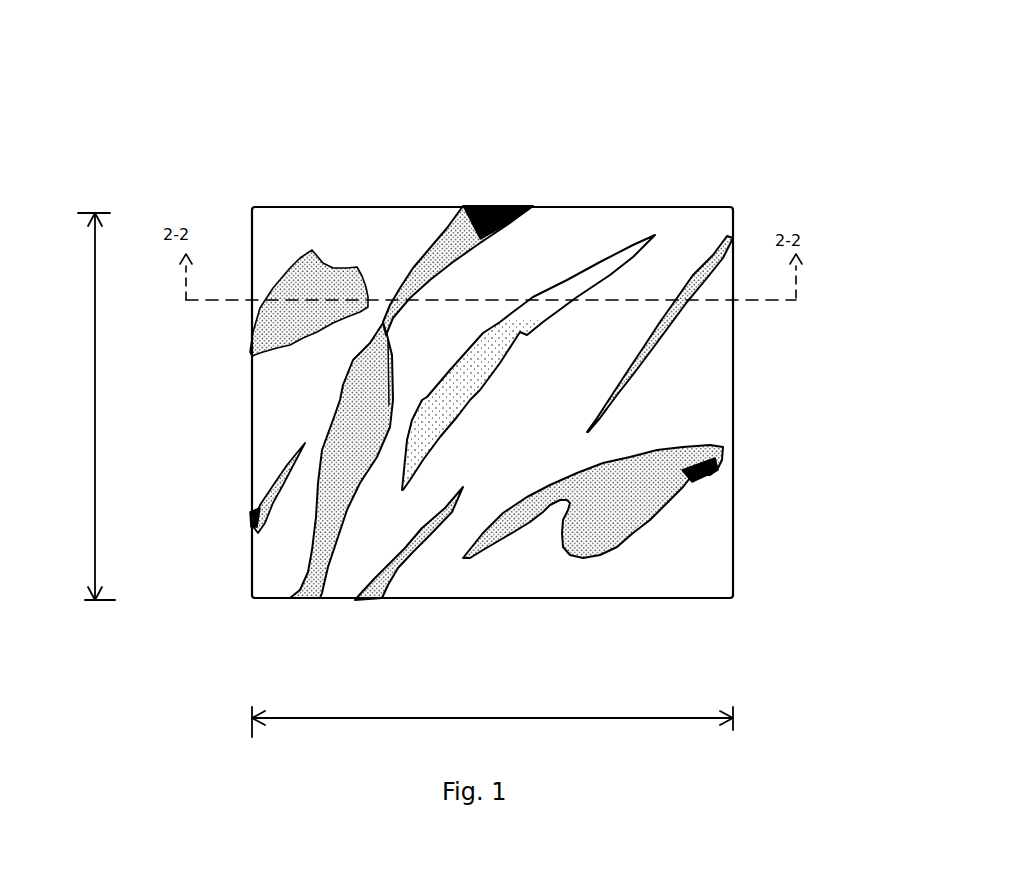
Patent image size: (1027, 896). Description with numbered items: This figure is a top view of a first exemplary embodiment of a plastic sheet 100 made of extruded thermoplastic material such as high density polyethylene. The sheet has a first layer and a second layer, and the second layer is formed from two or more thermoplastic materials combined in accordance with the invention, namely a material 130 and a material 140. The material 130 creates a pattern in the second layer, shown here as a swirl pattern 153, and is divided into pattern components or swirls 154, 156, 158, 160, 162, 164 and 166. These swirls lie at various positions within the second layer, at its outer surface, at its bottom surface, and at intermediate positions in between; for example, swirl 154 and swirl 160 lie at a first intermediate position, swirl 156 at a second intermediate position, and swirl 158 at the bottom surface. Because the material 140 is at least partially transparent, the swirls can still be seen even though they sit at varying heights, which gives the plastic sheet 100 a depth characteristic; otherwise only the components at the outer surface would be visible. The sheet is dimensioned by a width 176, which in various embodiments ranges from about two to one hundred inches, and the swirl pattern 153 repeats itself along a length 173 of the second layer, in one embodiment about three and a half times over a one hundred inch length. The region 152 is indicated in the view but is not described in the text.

The plastic sheet 100 is at (768, 50).
The material 130 is at (490, 212).
The material 140 is at (700, 540).
The matrix 152 is at (655, 390).
The swirl pattern 153 is at (290, 197).
The swirl 154 is at (326, 265).
The swirl 156 is at (442, 249).
The swirl 158 is at (511, 335).
The swirl 160 is at (663, 320).
The swirl 162 is at (258, 474).
The swirl 164 is at (402, 555).
The swirl 166 is at (603, 540).
The length 173 is at (95, 401).
The width 176 is at (607, 722).